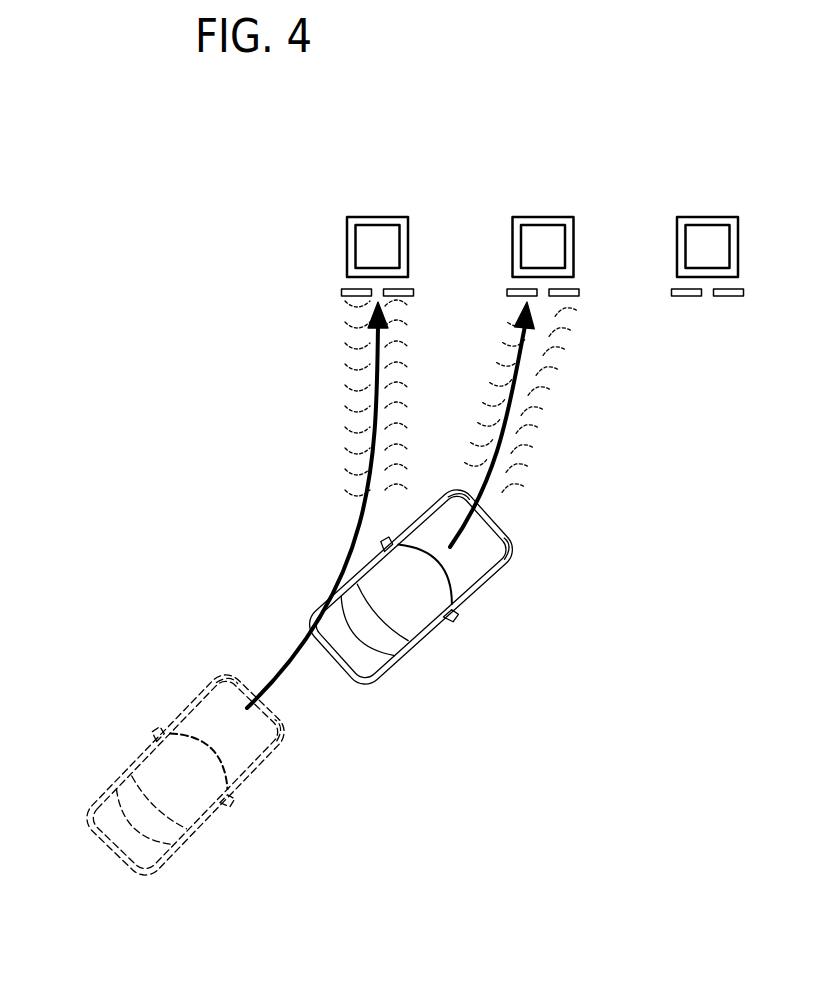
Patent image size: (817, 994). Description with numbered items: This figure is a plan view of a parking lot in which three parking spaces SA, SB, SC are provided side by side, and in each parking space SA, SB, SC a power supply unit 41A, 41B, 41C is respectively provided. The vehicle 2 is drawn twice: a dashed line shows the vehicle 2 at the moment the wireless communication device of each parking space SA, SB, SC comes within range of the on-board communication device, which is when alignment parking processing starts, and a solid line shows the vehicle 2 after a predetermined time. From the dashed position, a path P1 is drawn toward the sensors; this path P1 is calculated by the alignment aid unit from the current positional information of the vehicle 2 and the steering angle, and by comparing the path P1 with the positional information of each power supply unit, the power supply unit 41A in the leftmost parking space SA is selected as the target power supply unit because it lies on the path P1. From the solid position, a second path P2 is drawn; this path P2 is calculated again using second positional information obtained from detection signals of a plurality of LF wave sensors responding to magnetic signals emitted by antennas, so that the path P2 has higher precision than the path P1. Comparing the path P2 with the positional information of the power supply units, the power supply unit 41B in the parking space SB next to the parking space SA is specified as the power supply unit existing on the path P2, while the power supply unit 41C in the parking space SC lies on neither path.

The vehicle 2 is at (378, 670).
The power supply unit 41A is at (390, 234).
The power supply unit 41B is at (553, 234).
The power supply unit 41C is at (718, 234).
The parking space SA is at (340, 153).
The parking space SB is at (507, 153).
The parking space SC is at (672, 153).
The path P1 is at (363, 517).
The path P2 is at (510, 438).